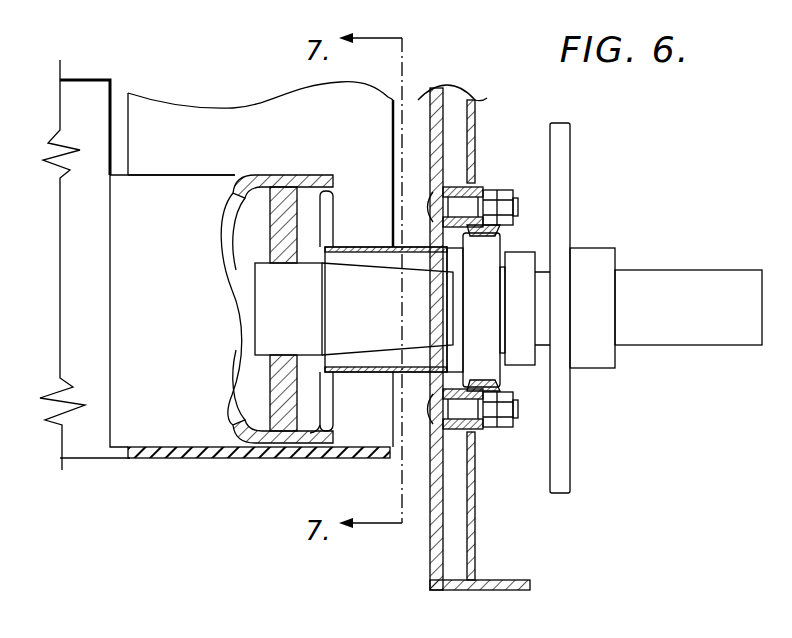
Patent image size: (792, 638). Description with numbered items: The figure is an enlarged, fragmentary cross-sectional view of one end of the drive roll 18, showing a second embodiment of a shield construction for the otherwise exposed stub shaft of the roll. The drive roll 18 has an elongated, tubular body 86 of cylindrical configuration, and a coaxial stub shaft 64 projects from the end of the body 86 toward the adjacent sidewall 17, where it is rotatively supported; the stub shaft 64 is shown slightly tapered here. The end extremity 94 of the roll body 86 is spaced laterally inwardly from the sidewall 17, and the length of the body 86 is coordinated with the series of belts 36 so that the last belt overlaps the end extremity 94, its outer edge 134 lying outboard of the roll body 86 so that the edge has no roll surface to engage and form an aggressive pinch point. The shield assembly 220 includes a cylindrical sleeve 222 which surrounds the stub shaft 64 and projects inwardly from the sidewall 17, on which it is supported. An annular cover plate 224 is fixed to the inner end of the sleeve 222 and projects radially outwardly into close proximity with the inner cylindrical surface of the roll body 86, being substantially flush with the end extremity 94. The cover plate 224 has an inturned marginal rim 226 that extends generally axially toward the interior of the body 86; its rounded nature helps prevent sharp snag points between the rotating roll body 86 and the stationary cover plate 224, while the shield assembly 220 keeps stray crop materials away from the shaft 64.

The sidewall 17 is at (432, 533).
The drive roll 18 is at (195, 165).
The belts 36 is at (248, 488).
The stub shaft 64 is at (273, 302).
The tubular body 86 is at (162, 195).
The end extremity 94 is at (338, 177).
The outer edge 134 is at (405, 117).
The shield assembly 220 is at (370, 232).
The cylindrical sleeve 222 is at (370, 368).
The annular cover plate 224 is at (355, 445).
The inturned marginal rim 226 is at (342, 432).